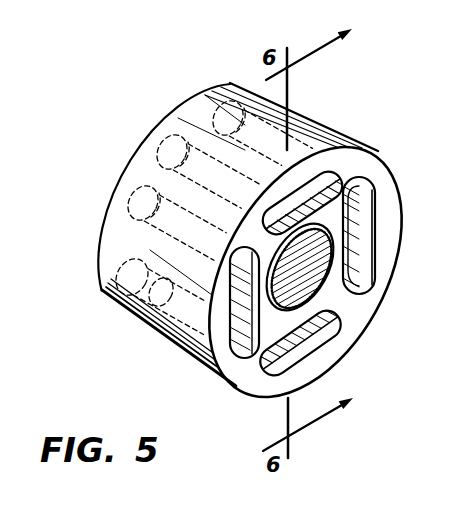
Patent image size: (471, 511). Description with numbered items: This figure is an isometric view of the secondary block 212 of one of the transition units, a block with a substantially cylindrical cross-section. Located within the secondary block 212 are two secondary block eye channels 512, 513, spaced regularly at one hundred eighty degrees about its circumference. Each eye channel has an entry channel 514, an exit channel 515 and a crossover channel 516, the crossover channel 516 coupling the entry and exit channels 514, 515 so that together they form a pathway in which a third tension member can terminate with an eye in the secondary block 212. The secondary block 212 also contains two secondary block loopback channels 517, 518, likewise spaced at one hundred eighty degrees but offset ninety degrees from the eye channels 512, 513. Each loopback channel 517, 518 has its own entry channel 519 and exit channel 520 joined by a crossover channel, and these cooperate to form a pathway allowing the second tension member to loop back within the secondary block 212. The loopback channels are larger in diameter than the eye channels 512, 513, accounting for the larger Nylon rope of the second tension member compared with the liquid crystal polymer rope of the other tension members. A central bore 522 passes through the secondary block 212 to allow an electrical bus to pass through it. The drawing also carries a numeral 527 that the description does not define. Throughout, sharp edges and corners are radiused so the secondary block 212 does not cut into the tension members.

The secondary block 212 is at (390, 170).
The secondary block eye channel 512 is at (338, 148).
The secondary block eye channel 513 is at (336, 346).
The entry channel 514 is at (234, 80).
The exit channel 515 is at (147, 146).
The crossover channel 516 is at (292, 160).
The secondary block loopback channel 517 is at (212, 372).
The secondary block loopback channel 518 is at (376, 240).
The entry channel 519 is at (112, 205).
The exit channel 520 is at (108, 272).
The central bore 522 is at (337, 294).
The bottom wall band 527 is at (202, 298).